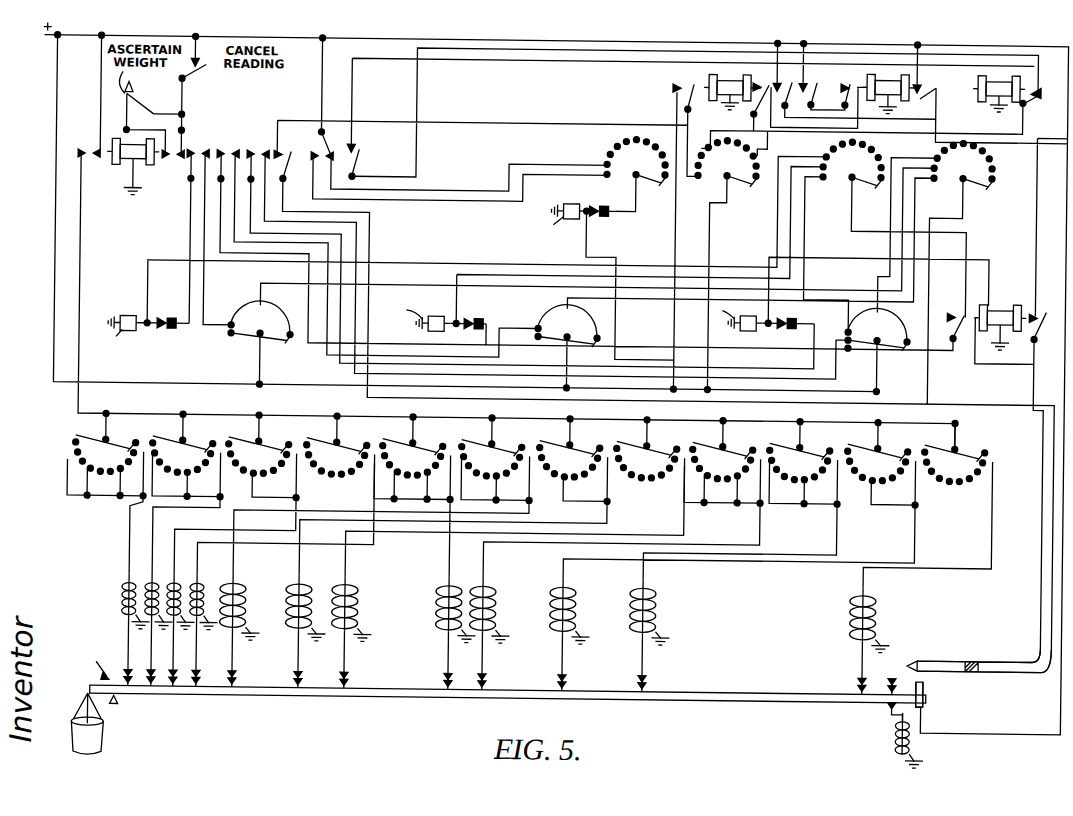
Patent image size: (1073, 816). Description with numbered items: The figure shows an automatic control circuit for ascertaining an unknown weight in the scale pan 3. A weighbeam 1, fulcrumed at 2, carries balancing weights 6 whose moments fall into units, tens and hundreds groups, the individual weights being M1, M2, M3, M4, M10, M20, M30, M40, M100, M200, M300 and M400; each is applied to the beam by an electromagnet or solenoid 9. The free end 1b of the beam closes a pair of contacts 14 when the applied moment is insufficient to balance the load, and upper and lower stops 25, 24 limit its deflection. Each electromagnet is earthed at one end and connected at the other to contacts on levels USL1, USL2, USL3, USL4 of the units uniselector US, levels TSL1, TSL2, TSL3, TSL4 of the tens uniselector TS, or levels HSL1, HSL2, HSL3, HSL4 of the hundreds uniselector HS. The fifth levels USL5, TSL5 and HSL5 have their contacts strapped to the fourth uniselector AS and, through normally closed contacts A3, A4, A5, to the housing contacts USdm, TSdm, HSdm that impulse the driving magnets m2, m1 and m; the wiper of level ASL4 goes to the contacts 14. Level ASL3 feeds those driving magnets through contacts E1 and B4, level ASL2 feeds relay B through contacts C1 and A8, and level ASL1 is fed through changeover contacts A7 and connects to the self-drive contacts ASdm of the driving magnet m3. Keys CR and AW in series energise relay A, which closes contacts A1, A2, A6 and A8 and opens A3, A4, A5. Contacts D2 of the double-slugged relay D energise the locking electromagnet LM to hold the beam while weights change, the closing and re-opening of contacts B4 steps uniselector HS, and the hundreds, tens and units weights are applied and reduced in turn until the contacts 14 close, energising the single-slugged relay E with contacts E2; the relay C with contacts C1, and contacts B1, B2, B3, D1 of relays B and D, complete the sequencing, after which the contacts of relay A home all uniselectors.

The relay contacts A1 is at (170, 164).
The relay contacts A2 is at (82, 139).
The normally closed relay contacts A3 is at (196, 140).
The normally closed relay contacts A4 is at (227, 141).
The normally closed relay contacts A5 is at (257, 141).
The relay contacts A6 is at (286, 151).
The changeover relay contacts A7 is at (324, 142).
The relay contacts A8 is at (359, 150).
The relay A/8 A is at (117, 158).
The key (Ascertain Weight) AW is at (136, 91).
The key (Cancel Reading) CR is at (199, 74).
The relay contacts B1 is at (809, 83).
The relay contacts B2 is at (783, 82).
The relay contacts B3 is at (759, 86).
The relay contacts B4 is at (671, 94).
The relay B/4 B is at (726, 92).
The relay contacts D1 is at (850, 83).
The relay contacts D2 is at (928, 84).
The double-slugged relay D/2 D is at (888, 81).
The relay C is at (986, 96).
The relay contacts C1 is at (1030, 83).
The normally closed relay contacts E1 is at (951, 313).
The relay contacts E2 is at (1034, 313).
The single-slugged relay E/2 E is at (985, 316).
The level L1 of uniselector AS ASL1 is at (636, 161).
The level L2 of uniselector AS ASL2 is at (727, 162).
The level L3 of uniselector AS ASL3 is at (852, 164).
The level L4 of uniselector AS ASL4 is at (963, 165).
The fourth uniselector AS is at (568, 201).
The housing or self-drive contacts of uniselector AS ASdm is at (614, 223).
The driving magnet of uniselector AS m3 is at (548, 227).
The units uniselector US is at (125, 311).
The housing contacts of uniselector US USdm is at (177, 334).
The driving magnet of uniselector US m2 is at (110, 338).
The fifth level L5 of uniselector US USL5 is at (261, 322).
The tens uniselector TS is at (433, 312).
The housing contacts of uniselector TS TSdm is at (486, 312).
The driving magnet of uniselector TS m1 is at (405, 306).
The fifth level L5 of uniselector TS TSL5 is at (568, 325).
The hundreds uniselector HS is at (745, 312).
The housing contacts of uniselector HS HSdm is at (799, 313).
The driving magnet of uniselector HS m is at (722, 308).
The fifth level L5 of uniselector HS HSL5 is at (878, 330).
The level L1 of uniselector US USL1 is at (107, 454).
The level L2 of uniselector US USL2 is at (186, 455).
The level L3 of uniselector US USL3 is at (262, 456).
The level L4 of uniselector US USL4 is at (339, 456).
The level L1 of uniselector TS TSL1 is at (414, 458).
The level L2 of uniselector TS TSL2 is at (495, 459).
The level L3 of uniselector TS TSL3 is at (573, 460).
The level L4 of uniselector TS TSL4 is at (649, 459).
The level L1 of uniselector HS HSL1 is at (724, 461).
The level L2 of uniselector HS HSL2 is at (803, 462).
The level L3 of uniselector HS HSL3 is at (881, 463).
The level L4 of uniselector HS HSL4 is at (957, 463).
The balancing weight of moment one M1 is at (135, 693).
The balancing weight of moment two M2 is at (158, 693).
The balancing weight of moment three M3 is at (180, 693).
The balancing weight of moment four M4 is at (203, 693).
The balancing weight of moment ten M10 is at (239, 693).
The balancing weight of moment twenty M20 is at (351, 693).
The balancing weight of moment thirty M30 is at (455, 693).
The balancing weight of moment forty M40 is at (569, 693).
The balancing weight of moment one hundred M100 is at (305, 693).
The balancing weight of moment two hundred M200 is at (489, 693).
The balancing weight of moment three hundred M300 is at (649, 693).
The balancing weight of moment four hundred M400 is at (869, 693).
The weighbeam 1 is at (392, 683).
The fulcrum 2 is at (118, 711).
The scale pan 3 is at (112, 738).
The balancing weights 6 is at (95, 658).
The electromagnet or solenoid 9 is at (112, 576).
The electrical contacts 14 is at (925, 655).
The lower stop 24 is at (896, 702).
The upper stop 25 is at (900, 676).
The free end of the beam 1b is at (932, 690).
The locking electromagnet LM is at (918, 740).